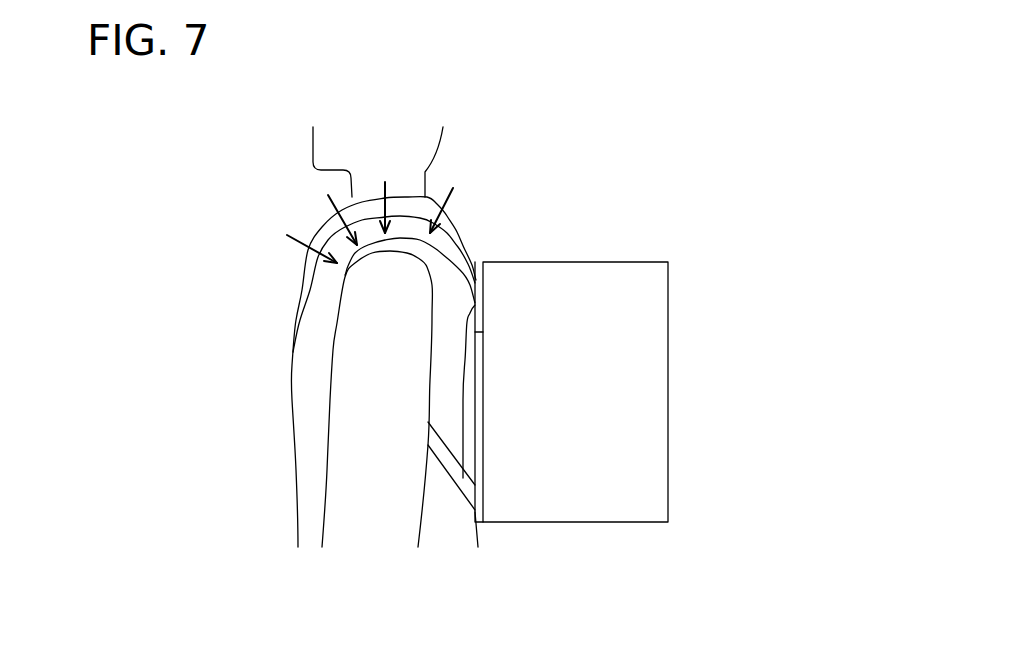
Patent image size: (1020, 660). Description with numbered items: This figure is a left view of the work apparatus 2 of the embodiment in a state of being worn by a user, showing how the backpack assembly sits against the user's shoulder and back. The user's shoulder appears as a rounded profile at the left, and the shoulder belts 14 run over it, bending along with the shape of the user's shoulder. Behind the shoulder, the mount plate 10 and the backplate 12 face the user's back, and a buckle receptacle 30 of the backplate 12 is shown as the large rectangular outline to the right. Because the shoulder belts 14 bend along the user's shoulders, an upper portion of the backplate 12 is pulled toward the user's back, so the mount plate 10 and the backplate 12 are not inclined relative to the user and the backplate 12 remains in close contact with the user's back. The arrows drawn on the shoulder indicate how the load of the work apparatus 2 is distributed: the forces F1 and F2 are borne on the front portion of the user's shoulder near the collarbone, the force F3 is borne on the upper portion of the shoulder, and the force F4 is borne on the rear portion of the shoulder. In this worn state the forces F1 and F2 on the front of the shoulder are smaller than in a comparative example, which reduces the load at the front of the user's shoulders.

The work apparatus 2 is at (705, 128).
The mount plate 10 is at (482, 260).
The backplate 12 is at (477, 448).
The shoulder belts 14 is at (453, 261).
The buckle receptacles 30 is at (603, 262).
The force F1 is at (287, 240).
The force F2 is at (327, 201).
The force F3 is at (385, 186).
The force F4 is at (447, 208).